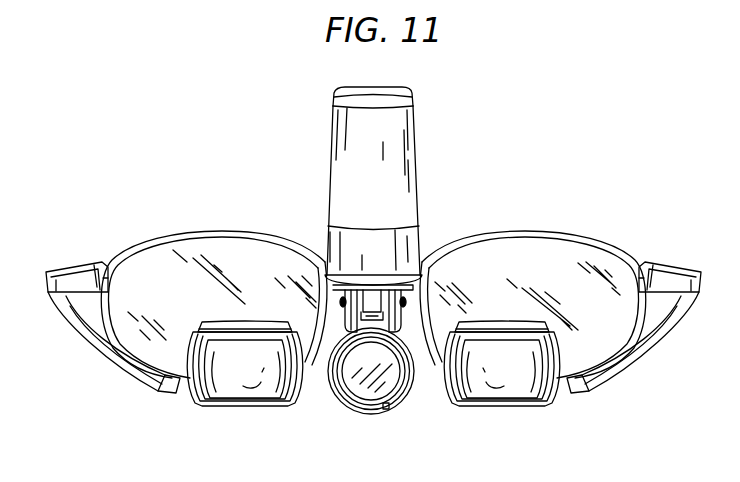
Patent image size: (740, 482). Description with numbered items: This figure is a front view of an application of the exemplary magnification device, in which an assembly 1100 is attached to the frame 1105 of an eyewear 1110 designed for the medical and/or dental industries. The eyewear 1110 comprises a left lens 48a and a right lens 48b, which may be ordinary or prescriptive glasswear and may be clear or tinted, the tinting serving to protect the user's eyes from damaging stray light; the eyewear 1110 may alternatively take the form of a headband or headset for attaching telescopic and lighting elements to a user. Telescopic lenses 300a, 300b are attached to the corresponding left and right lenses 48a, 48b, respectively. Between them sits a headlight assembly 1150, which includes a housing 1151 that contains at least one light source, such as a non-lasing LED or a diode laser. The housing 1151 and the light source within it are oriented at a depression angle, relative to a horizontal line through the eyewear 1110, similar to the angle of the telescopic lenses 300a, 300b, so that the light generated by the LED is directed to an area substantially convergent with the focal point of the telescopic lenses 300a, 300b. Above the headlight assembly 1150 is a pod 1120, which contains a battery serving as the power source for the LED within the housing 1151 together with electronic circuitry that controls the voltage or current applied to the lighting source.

The assembly 1100 is at (284, 156).
The left lens 48a is at (132, 266).
The right lens 48b is at (612, 267).
The frame 1105 is at (528, 232).
The eyewear 1110 is at (570, 235).
The pod 1120 is at (403, 147).
The headlight assembly 1150 is at (338, 215).
The housing 1151 is at (385, 407).
The left telescopic lens 300a is at (240, 402).
The right telescopic lens 300b is at (503, 402).